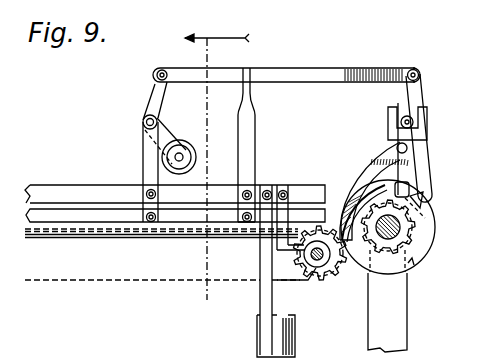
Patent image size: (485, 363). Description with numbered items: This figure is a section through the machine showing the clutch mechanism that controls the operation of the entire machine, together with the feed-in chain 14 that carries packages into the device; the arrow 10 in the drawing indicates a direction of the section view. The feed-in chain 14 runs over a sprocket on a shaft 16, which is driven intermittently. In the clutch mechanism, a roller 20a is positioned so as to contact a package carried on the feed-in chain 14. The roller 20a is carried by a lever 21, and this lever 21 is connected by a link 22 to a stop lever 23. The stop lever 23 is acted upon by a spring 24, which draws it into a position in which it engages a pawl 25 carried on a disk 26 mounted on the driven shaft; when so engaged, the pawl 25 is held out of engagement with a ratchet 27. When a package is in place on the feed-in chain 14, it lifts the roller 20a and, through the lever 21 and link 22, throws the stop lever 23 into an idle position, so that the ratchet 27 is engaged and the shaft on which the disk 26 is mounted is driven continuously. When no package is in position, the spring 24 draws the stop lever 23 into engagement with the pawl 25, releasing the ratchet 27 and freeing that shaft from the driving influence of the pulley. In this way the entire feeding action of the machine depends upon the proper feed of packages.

The direction of machine travel 10 is at (217, 156).
The feed-in chain 14 is at (93, 280).
The shaft 16 is at (320, 282).
The roller 20a is at (192, 150).
The lever 21 is at (153, 106).
The link 22 is at (264, 73).
The stop lever 23 is at (425, 160).
The spring 24 is at (380, 161).
The pawl 25 is at (413, 188).
The disk 26 is at (430, 218).
The ratchet 27 is at (405, 245).